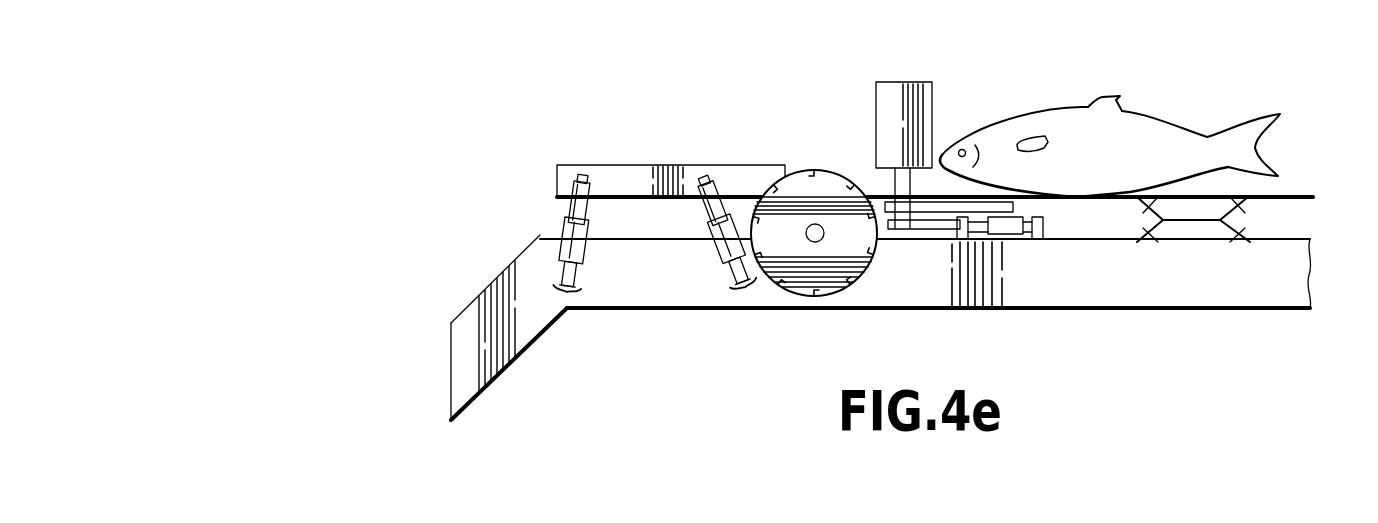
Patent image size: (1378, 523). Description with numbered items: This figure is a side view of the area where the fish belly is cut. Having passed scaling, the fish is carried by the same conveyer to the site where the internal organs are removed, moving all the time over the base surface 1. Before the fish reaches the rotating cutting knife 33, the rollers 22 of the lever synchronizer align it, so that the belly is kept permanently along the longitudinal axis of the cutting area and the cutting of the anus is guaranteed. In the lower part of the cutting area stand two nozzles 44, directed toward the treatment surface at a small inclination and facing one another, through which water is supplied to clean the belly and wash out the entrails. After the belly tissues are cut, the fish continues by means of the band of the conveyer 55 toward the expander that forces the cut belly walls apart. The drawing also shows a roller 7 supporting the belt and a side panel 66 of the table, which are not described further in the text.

The base surface 1 is at (1312, 207).
The roller 7 is at (1251, 243).
The rollers 22 is at (890, 108).
The rotating cutting knife 33 is at (804, 181).
The nozzles 44 is at (566, 245).
The conveyer 55 is at (624, 177).
The side panel 66 is at (473, 326).